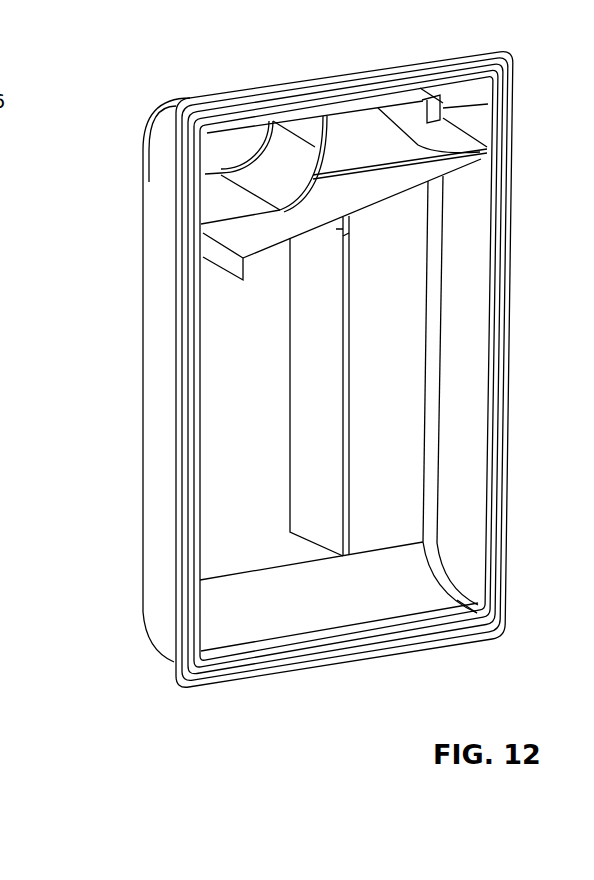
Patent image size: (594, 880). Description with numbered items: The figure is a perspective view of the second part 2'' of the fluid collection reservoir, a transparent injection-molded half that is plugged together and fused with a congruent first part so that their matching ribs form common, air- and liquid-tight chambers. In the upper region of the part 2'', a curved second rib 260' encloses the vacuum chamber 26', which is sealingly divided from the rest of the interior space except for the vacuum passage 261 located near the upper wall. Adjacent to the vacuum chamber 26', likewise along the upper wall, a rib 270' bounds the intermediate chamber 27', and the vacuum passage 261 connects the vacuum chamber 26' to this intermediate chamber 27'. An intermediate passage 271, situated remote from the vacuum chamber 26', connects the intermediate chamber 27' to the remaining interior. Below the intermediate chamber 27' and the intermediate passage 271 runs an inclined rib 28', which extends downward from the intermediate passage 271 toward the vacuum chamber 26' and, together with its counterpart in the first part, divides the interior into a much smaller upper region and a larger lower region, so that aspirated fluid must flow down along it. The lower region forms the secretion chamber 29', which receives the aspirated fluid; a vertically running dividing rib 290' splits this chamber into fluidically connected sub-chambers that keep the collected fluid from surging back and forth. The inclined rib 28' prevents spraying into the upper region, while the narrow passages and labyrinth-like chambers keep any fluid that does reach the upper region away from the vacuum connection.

The second part of the reservoir 2'' is at (328, 352).
The vacuum passage 261 is at (300, 122).
The intermediate chamber 27' is at (433, 81).
The intermediate passage 271 is at (490, 108).
The rib of intermediate chamber 270' is at (509, 144).
The vacuum chamber 26' is at (201, 172).
The second curved rib 260' is at (201, 183).
The inclined rib 28' is at (345, 214).
The secretion chamber 29' is at (273, 413).
The dividing rib 290' is at (431, 386).